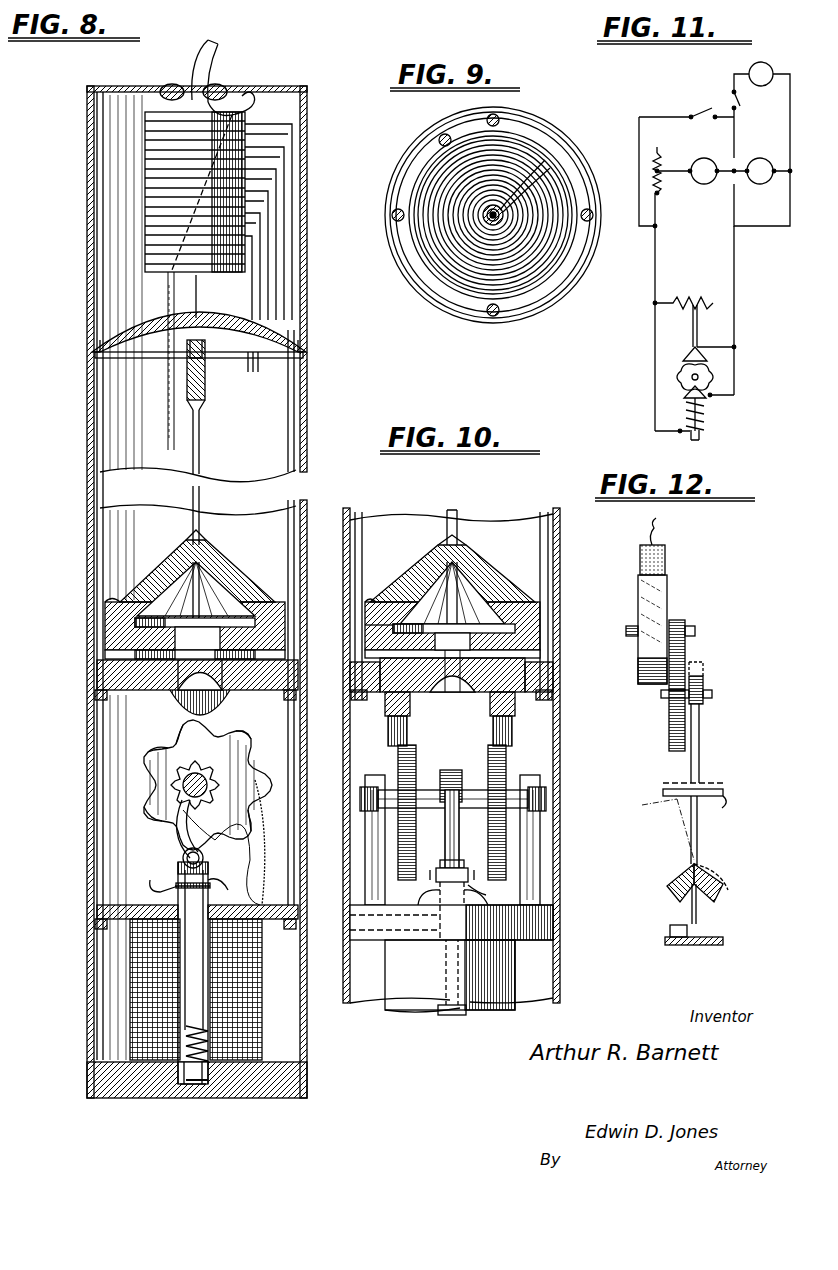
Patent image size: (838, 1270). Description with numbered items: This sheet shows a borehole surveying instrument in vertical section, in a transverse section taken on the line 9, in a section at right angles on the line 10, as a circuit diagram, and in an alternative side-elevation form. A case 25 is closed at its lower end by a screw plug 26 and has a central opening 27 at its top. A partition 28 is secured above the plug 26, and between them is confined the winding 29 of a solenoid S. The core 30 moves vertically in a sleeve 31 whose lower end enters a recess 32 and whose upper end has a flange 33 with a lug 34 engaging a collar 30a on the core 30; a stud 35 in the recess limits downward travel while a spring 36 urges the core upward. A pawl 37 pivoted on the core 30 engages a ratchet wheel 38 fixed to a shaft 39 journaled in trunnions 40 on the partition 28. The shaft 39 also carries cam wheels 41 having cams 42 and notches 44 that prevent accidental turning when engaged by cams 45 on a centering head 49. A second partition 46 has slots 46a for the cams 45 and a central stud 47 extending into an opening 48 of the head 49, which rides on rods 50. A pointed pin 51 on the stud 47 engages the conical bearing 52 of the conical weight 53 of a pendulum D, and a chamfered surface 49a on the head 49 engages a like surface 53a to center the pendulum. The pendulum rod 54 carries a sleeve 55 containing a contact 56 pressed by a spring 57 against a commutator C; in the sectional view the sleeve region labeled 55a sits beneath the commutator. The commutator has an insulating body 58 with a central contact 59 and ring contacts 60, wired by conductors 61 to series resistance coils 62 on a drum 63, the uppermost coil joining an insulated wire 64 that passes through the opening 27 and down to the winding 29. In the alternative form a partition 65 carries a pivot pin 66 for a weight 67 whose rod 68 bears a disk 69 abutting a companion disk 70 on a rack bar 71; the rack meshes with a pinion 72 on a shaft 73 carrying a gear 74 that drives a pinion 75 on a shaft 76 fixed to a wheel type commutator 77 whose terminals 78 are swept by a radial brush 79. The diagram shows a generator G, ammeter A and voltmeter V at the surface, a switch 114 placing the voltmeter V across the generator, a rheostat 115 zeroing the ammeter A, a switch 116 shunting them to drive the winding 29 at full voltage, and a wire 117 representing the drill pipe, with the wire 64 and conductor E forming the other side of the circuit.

In FIG. 8, the section line 9 is at (73, 366).
In FIG. 8, the section line 10 is at (152, 497).
In FIG. 8, the case 25 is at (90, 450).
In FIG. 9, the case 25 is at (462, 112).
In FIG. 10, the case 25 is at (560, 872).
In FIG. 8, the screw plug 26 is at (266, 1094).
In FIG. 8, the central opening 27 is at (176, 84).
In FIG. 8, the partition 28 is at (296, 905).
In FIG. 10, the partition 28 is at (548, 940).
In FIG. 8, the winding 29 is at (240, 985).
In FIG. 10, the winding 29 is at (408, 1016).
In FIG. 11, the winding 29 is at (703, 421).
In FIG. 8, the core 30 is at (190, 955).
In FIG. 10, the core 30 is at (438, 884).
In FIG. 11, the core 30 is at (698, 441).
In FIG. 8, the collar 30a is at (212, 886).
In FIG. 10, the collar 30a is at (485, 893).
In FIG. 8, the sleeve 31 is at (183, 1038).
In FIG. 8, the recess 32 is at (203, 1084).
In FIG. 8, the flange 33 is at (212, 889).
In FIG. 8, the lug 34 is at (170, 887).
In FIG. 10, the lug 34 is at (425, 905).
In FIG. 8, the stud 35 is at (195, 1082).
In FIG. 8, the spring 36 is at (184, 1066).
In FIG. 8, the pawl 37 is at (176, 822).
In FIG. 10, the pawl 37 is at (460, 820).
In FIG. 8, the ratchet wheel 38 is at (212, 792).
In FIG. 10, the ratchet wheel 38 is at (456, 775).
In FIG. 8, the shaft 39 is at (192, 782).
In FIG. 10, the shaft 39 is at (418, 790).
In FIG. 10, the trunnions 40 is at (374, 780).
In FIG. 8, the cam wheels 41 is at (132, 781).
In FIG. 10, the cam wheels 41 is at (496, 742).
In FIG. 11, the cam wheels 41 is at (701, 378).
In FIG. 8, the cams 42 is at (145, 766).
In FIG. 8, the notches 44 is at (128, 750).
In FIG. 8, the cams 45 is at (190, 705).
In FIG. 10, the cams 45 is at (412, 700).
In FIG. 8, the second partition 46 is at (125, 675).
In FIG. 10, the second partition 46 is at (470, 695).
In FIG. 10, the slots 46a is at (540, 680).
In FIG. 10, the stud 47 is at (450, 690).
In FIG. 10, the opening 48 is at (456, 632).
In FIG. 8, the centering head 49 is at (120, 630).
In FIG. 10, the centering head 49 is at (548, 624).
In FIG. 8, the chamfered surface 49a is at (112, 600).
In FIG. 10, the chamfered surface 49a is at (378, 602).
In FIG. 8, the rods 50 is at (100, 412).
In FIG. 9, the rods 50 is at (500, 118).
In FIG. 10, the rods 50 is at (550, 560).
In FIG. 8, the pointed pin 51 is at (203, 582).
In FIG. 10, the pointed pin 51 is at (460, 590).
In FIG. 8, the conical bearing 52 is at (206, 556).
In FIG. 10, the conical bearing 52 is at (445, 548).
In FIG. 8, the conical weight 53 is at (236, 600).
In FIG. 10, the conical weight 53 is at (465, 580).
In FIG. 10, the chamfered surface 53a is at (380, 625).
In FIG. 8, the rod 54 is at (200, 452).
In FIG. 10, the rod 54 is at (460, 512).
In FIG. 8, the sleeve 55 is at (205, 385).
In FIG. 9, the sleeve 55 is at (482, 214).
In FIG. 8, the hub plate 55a is at (140, 622).
In FIG. 8, the contact 56 is at (205, 365).
In FIG. 9, the contact 56 is at (488, 220).
In FIG. 11, the contact 56 is at (690, 318).
In FIG. 8, the spring 57 is at (201, 402).
In FIG. 9, the spring 57 is at (485, 222).
In FIG. 8, the body 58 is at (298, 328).
In FIG. 9, the body 58 is at (440, 290).
In FIG. 8, the central contact 59 is at (193, 316).
In FIG. 8, the ring contacts 60 is at (259, 372).
In FIG. 9, the ring contacts 60 is at (548, 165).
In FIG. 8, the conductors 61 is at (280, 225).
In FIG. 8, the resistance coils 62 is at (148, 216).
In FIG. 11, the resistance coils 62 is at (697, 294).
In FIG. 8, the drum 63 is at (150, 165).
In FIG. 8, the insulated conductor 64 is at (210, 62).
In FIG. 9, the insulated conductor 64 is at (438, 136).
In FIG. 11, the insulated conductor 64 is at (655, 388).
In FIG. 12, the partition 65 is at (724, 944).
In FIG. 12, the pivot pin 66 is at (700, 912).
In FIG. 12, the weight 67 is at (708, 883).
In FIG. 12, the rod 68 is at (698, 842).
In FIG. 12, the disk 69 is at (736, 807).
In FIG. 12, the companion disk 70 is at (720, 788).
In FIG. 12, the rack bar 71 is at (700, 745).
In FIG. 12, the pinion 72 is at (704, 686).
In FIG. 12, the shaft 73 is at (712, 696).
In FIG. 12, the gear 74 is at (670, 738).
In FIG. 12, the pinion 75 is at (676, 622).
In FIG. 12, the shaft 76 is at (695, 631).
In FIG. 12, the wheel type commutator 77 is at (640, 660).
In FIG. 12, the terminals 78 is at (660, 598).
In FIG. 12, the radial brush 79 is at (666, 554).
In FIG. 11, the switch 114 is at (737, 106).
In FIG. 11, the rheostat 115 is at (659, 194).
In FIG. 11, the switch 116 is at (703, 108).
In FIG. 11, the wire 117 is at (735, 252).
In FIG. 8, the commutator C is at (96, 325).
In FIG. 9, the commutator C is at (405, 173).
In FIG. 8, the pendulum D is at (140, 574).
In FIG. 10, the pendulum D is at (425, 545).
In FIG. 11, the pendulum D is at (684, 344).
In FIG. 8, the conductor E is at (232, 49).
In FIG. 11, the conductor E is at (656, 250).
In FIG. 8, the solenoid S is at (269, 1024).
In FIG. 10, the solenoid S is at (505, 988).
In FIG. 11, the solenoid S is at (713, 414).
In FIG. 11, the generator G is at (761, 74).
In FIG. 11, the ammeter A is at (704, 171).
In FIG. 11, the voltmeter V is at (760, 171).